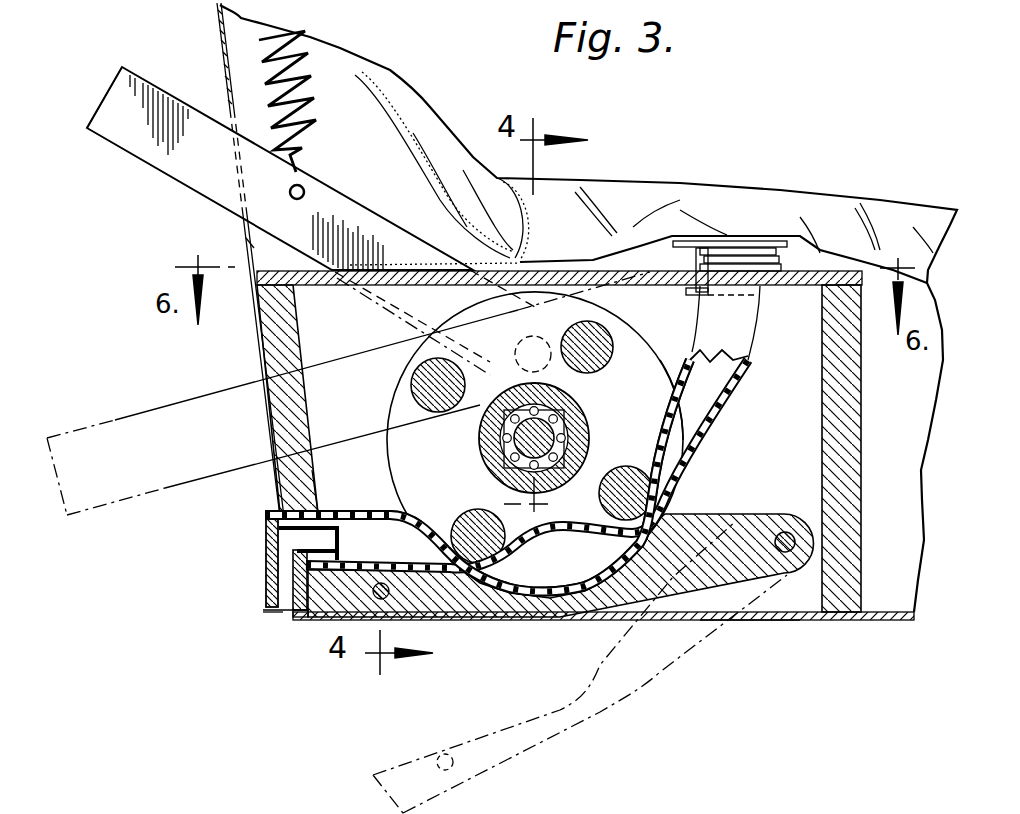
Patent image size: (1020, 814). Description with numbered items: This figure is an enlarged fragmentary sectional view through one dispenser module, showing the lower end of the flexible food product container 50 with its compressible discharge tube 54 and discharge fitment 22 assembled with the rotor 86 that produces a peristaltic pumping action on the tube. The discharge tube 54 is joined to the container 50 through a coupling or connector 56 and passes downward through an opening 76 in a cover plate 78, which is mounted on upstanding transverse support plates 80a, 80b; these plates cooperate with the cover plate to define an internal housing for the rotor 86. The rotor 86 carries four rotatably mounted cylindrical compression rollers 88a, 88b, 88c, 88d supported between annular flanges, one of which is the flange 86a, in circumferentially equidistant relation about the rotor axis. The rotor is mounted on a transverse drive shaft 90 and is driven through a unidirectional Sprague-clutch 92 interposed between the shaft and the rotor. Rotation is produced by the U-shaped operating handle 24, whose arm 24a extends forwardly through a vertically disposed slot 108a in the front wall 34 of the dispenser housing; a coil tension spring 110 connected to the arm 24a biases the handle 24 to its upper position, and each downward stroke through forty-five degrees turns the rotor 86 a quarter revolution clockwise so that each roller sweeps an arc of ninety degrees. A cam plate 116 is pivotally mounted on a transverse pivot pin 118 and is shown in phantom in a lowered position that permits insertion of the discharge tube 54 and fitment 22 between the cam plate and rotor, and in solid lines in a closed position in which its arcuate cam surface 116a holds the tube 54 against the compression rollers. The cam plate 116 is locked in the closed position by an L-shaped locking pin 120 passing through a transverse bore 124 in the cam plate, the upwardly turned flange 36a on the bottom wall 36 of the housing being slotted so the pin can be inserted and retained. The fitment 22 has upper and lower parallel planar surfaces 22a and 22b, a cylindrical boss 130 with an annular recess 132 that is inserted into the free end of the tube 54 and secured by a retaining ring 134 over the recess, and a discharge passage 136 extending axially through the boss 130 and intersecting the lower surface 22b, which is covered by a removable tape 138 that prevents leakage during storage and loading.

The discharge fitment 22 is at (250, 546).
The upper planar surface 22a is at (266, 514).
The lower planar surface 22b is at (265, 612).
The operating handle 24 is at (97, 98).
The arm of operating handle 24a is at (124, 130).
The front wall 34 is at (213, 18).
The bottom wall 36 is at (807, 620).
The upwardly turned flange 36a is at (752, 620).
The flexible container 50 is at (388, 172).
The discharge tube 54 is at (742, 404).
The connector 56 is at (787, 260).
The opening in cover plate 76 is at (760, 303).
The cover plate 78 is at (310, 284).
The transverse support plate 80a is at (265, 323).
The transverse support plate 80b is at (843, 386).
The rotor 86 is at (380, 413).
The annular flange 86a is at (648, 363).
The cylindrical roller 88a is at (600, 338).
The cylindrical roller 88b is at (663, 488).
The cylindrical roller 88c is at (462, 514).
The cylindrical roller 88d is at (407, 343).
The drive shaft 90 is at (480, 445).
The Sprague-clutch 92 is at (560, 410).
The slot 108a is at (247, 246).
The coil tension spring 110 is at (262, 69).
The cam plate 116 is at (545, 793).
The arcuate cam surface 116a is at (578, 706).
The pivot pin 118 is at (797, 530).
The locking pin 120 is at (382, 600).
The transverse bore 124 is at (497, 610).
The boss portion 130 is at (364, 532).
The annular recess 132 is at (527, 464).
The retaining ring 134 is at (319, 500).
The discharge passage 136 is at (290, 578).
The tape 138 is at (290, 617).